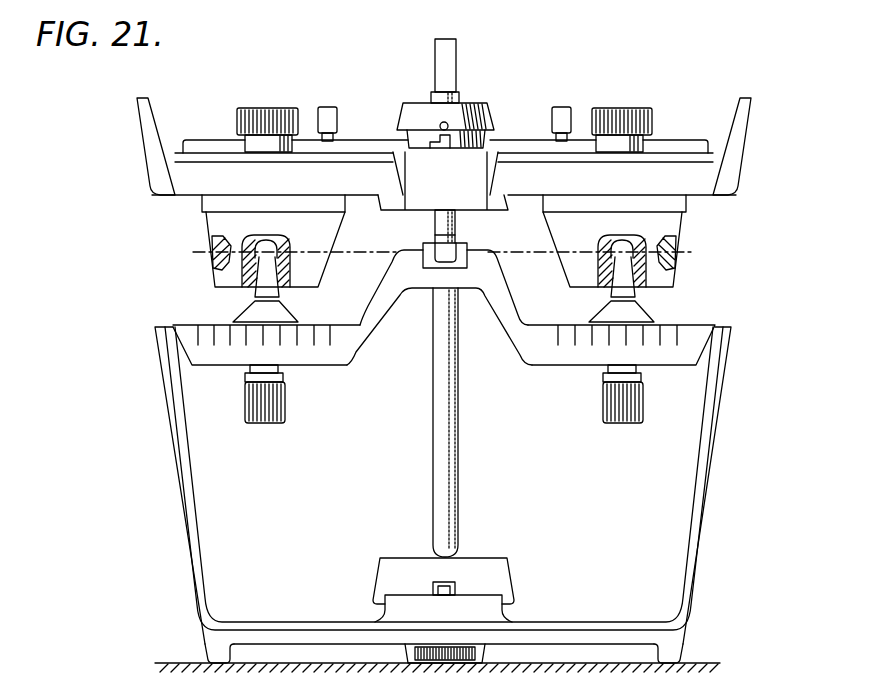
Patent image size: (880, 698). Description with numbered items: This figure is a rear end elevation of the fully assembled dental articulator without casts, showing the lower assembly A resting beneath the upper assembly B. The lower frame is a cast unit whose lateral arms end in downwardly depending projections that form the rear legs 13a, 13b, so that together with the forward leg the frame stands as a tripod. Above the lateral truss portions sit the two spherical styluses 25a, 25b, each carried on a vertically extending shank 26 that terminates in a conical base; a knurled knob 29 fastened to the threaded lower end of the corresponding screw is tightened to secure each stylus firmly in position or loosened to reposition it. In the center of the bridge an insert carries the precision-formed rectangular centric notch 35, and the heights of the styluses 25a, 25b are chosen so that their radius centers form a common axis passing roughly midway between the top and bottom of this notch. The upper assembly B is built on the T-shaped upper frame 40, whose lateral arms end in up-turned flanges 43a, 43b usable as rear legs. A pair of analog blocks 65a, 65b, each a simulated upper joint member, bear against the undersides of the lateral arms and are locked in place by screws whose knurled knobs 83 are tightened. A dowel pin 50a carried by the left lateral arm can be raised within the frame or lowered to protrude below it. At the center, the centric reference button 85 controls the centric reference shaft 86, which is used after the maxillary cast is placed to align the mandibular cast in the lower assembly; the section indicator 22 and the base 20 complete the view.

The rear leg 13a is at (213, 648).
The rear leg 13b is at (678, 646).
The base 20 is at (496, 560).
The section line 22 is at (443, 63).
The spherical stylus 25a is at (262, 240).
The spherical stylus 25b is at (626, 238).
The shank 26 is at (248, 308).
The knurled knob 29 is at (270, 427).
The centric notch 35 is at (448, 258).
The upper frame 40 is at (537, 81).
The up-turned flange 43a is at (148, 122).
The up-turned flange 43b is at (745, 117).
The dowel pin 50a is at (338, 117).
The analog block 65a is at (215, 275).
The analog block 65b is at (677, 270).
The knurled knob 83 is at (257, 107).
The centric reference button 85 is at (470, 104).
The centric reference shaft 86 is at (438, 226).
The lower body A is at (110, 517).
The upper assembly B is at (686, 86).